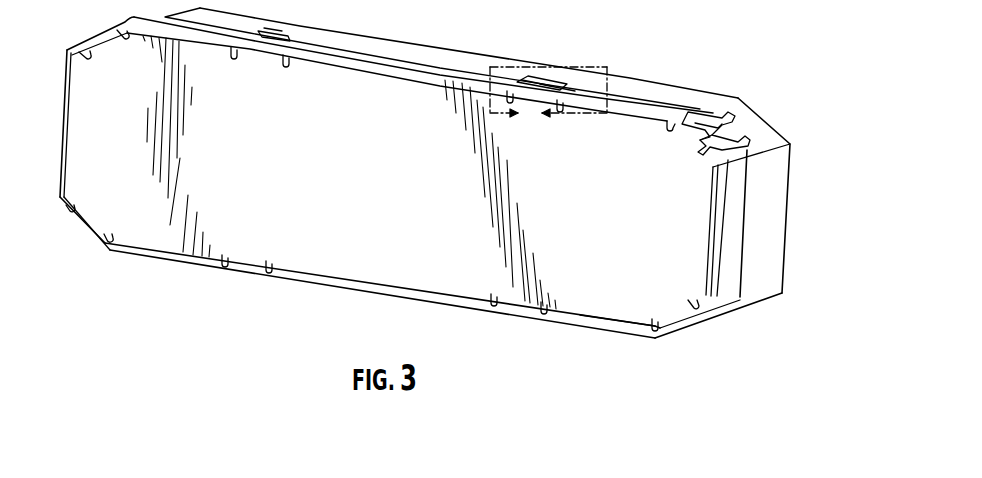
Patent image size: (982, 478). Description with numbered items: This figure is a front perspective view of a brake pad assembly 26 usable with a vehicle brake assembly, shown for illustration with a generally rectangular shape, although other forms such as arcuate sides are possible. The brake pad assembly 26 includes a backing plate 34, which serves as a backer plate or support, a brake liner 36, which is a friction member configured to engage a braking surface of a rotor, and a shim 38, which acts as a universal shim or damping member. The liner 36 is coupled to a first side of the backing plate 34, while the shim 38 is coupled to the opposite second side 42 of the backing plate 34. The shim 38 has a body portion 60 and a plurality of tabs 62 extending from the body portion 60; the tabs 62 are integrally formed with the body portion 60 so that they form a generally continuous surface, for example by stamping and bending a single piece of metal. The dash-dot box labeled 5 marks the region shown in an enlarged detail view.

The brake pad assembly 26 is at (722, 62).
The second side 42 is at (376, 63).
The tabs 62 is at (543, 78).
The brake liner 36 is at (777, 247).
The backing plate 34 is at (727, 287).
The body portion 60 is at (383, 248).
The shim 38 is at (597, 302).
The detail view section 5 is at (548, 99).